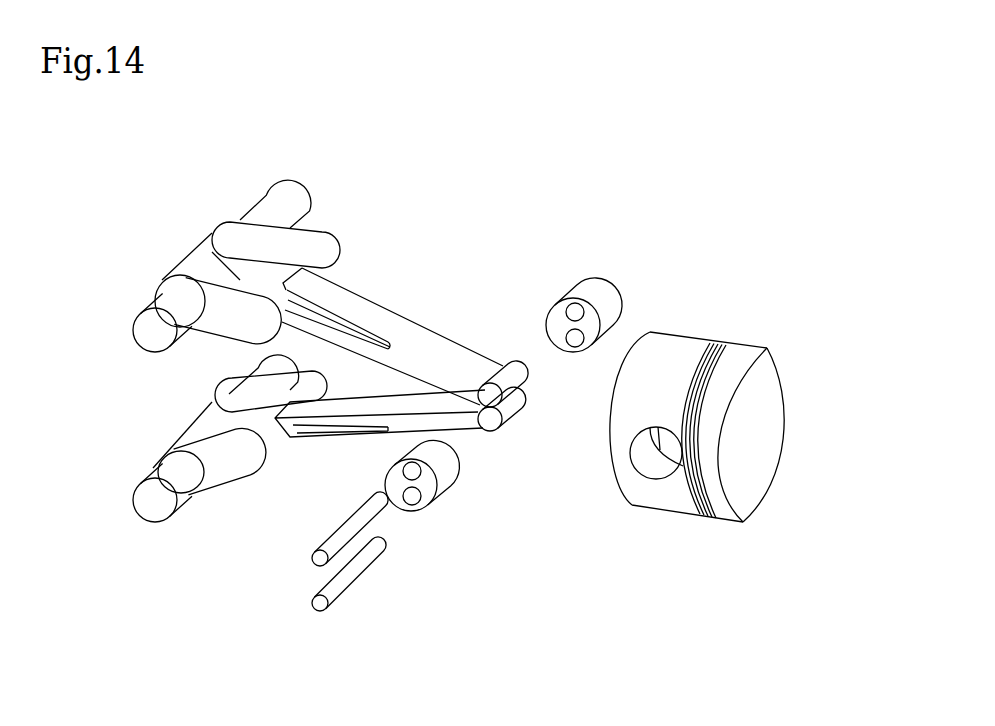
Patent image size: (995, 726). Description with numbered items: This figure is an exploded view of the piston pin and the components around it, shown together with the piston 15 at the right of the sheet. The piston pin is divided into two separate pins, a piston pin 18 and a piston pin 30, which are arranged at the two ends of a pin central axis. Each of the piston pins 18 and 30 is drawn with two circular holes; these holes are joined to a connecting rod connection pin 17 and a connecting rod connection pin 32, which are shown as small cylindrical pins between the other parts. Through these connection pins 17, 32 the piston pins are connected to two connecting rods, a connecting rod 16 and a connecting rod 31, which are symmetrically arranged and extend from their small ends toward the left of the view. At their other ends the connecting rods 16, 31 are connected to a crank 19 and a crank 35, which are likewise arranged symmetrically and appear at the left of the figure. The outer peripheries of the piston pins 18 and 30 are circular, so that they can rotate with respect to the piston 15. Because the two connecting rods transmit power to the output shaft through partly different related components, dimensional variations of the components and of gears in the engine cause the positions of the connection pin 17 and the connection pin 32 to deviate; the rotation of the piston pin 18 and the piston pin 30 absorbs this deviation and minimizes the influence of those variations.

The piston 15 is at (633, 507).
The connecting rod 16 is at (392, 303).
The connecting rod connection pin 17 is at (316, 560).
The piston pin 18 is at (438, 503).
The crank 19 is at (155, 283).
The piston pin 30 is at (572, 290).
The connecting rod 31 is at (313, 453).
The connecting rod connection pin 32 is at (348, 590).
The crank 35 is at (150, 470).